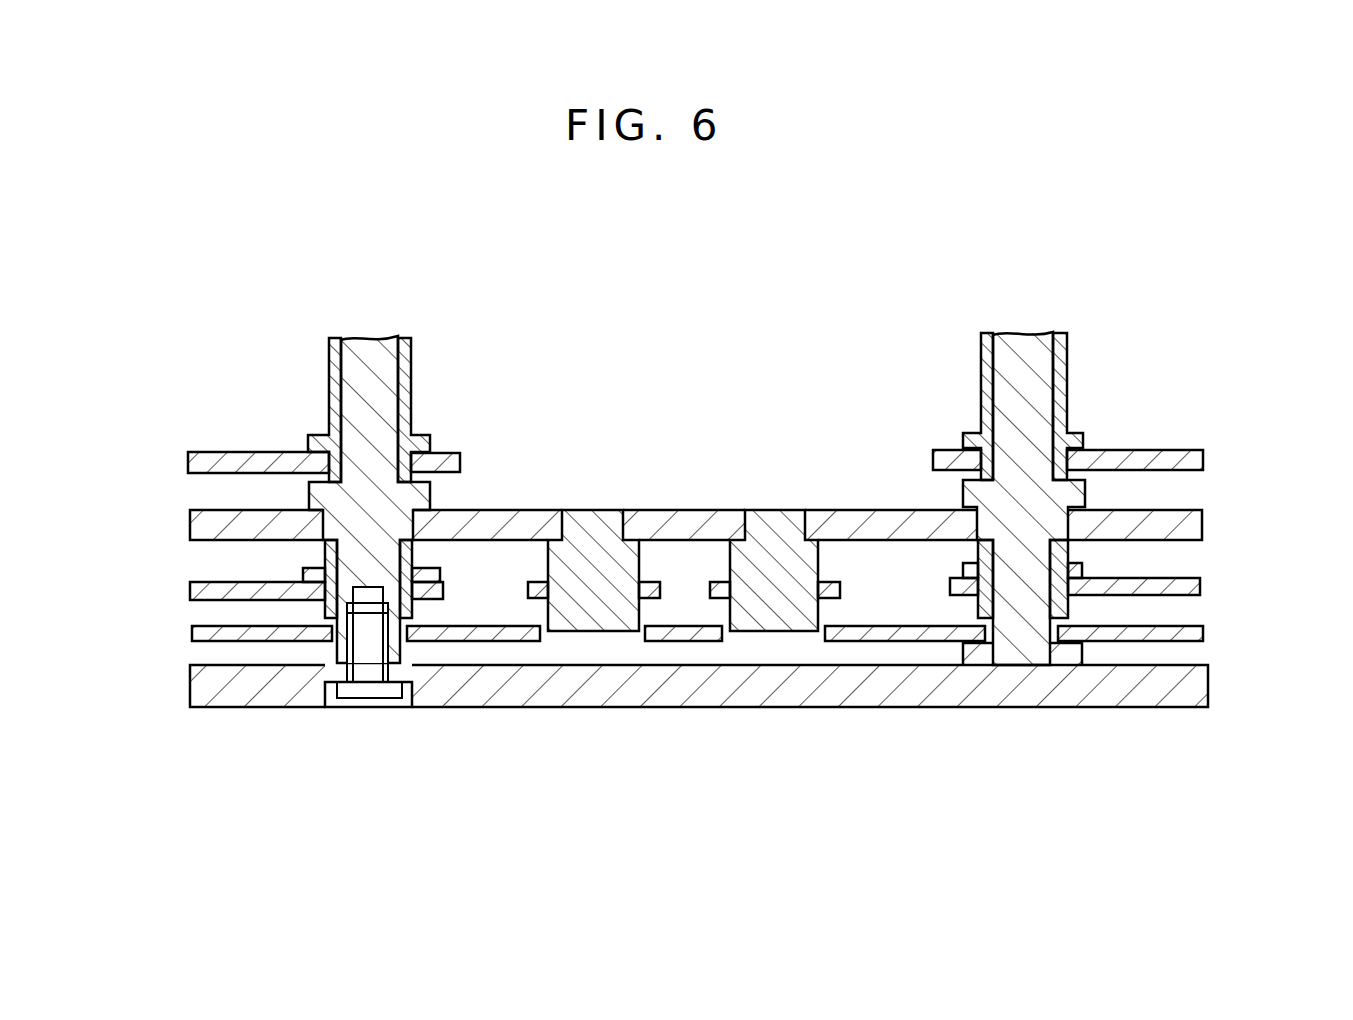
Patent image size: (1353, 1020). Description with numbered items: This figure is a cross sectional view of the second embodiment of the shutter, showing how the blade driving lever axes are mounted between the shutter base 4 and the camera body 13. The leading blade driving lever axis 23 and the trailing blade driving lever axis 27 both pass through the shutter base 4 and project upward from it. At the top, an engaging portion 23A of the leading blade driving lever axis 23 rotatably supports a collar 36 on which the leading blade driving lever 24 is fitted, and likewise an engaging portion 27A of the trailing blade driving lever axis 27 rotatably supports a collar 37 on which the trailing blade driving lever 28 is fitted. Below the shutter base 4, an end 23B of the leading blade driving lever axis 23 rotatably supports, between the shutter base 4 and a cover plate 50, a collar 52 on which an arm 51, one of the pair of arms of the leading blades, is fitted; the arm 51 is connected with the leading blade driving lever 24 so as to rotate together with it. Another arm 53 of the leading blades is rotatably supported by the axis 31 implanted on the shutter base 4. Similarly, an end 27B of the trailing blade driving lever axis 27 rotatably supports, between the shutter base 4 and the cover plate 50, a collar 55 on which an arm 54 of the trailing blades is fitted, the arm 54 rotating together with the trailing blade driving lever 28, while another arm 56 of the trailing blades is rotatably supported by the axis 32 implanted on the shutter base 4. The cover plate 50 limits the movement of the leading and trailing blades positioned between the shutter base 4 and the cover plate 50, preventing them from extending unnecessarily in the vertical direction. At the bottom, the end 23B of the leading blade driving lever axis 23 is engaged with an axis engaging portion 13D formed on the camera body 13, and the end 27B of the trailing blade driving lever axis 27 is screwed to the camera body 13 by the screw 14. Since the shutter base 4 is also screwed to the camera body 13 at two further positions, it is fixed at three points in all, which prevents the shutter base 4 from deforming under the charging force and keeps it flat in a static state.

The shutter base 4 is at (860, 511).
The camera body 13 is at (718, 692).
The axis engaging portion 13D is at (1068, 657).
The screw 14 is at (380, 690).
The leading blade driving lever axis 23 is at (1111, 505).
The engaging portion 23A is at (1027, 333).
The end 23B is at (1008, 662).
The leading blade driving lever 24 is at (1165, 451).
The trailing blade driving lever axis 27 is at (400, 515).
The engaging portion 27A is at (383, 344).
The end 27B is at (338, 652).
The trailing blade driving lever 28 is at (241, 452).
The axis 31 is at (773, 511).
The axis 32 is at (593, 511).
The collar 36 is at (1067, 362).
The collar 37 is at (412, 356).
The cover plate 50 is at (200, 636).
The arm 51 is at (1200, 586).
The collar 52 is at (1082, 570).
The arm 53 is at (840, 591).
The arm 54 is at (192, 589).
The collar 55 is at (304, 574).
The arm 56 is at (528, 587).